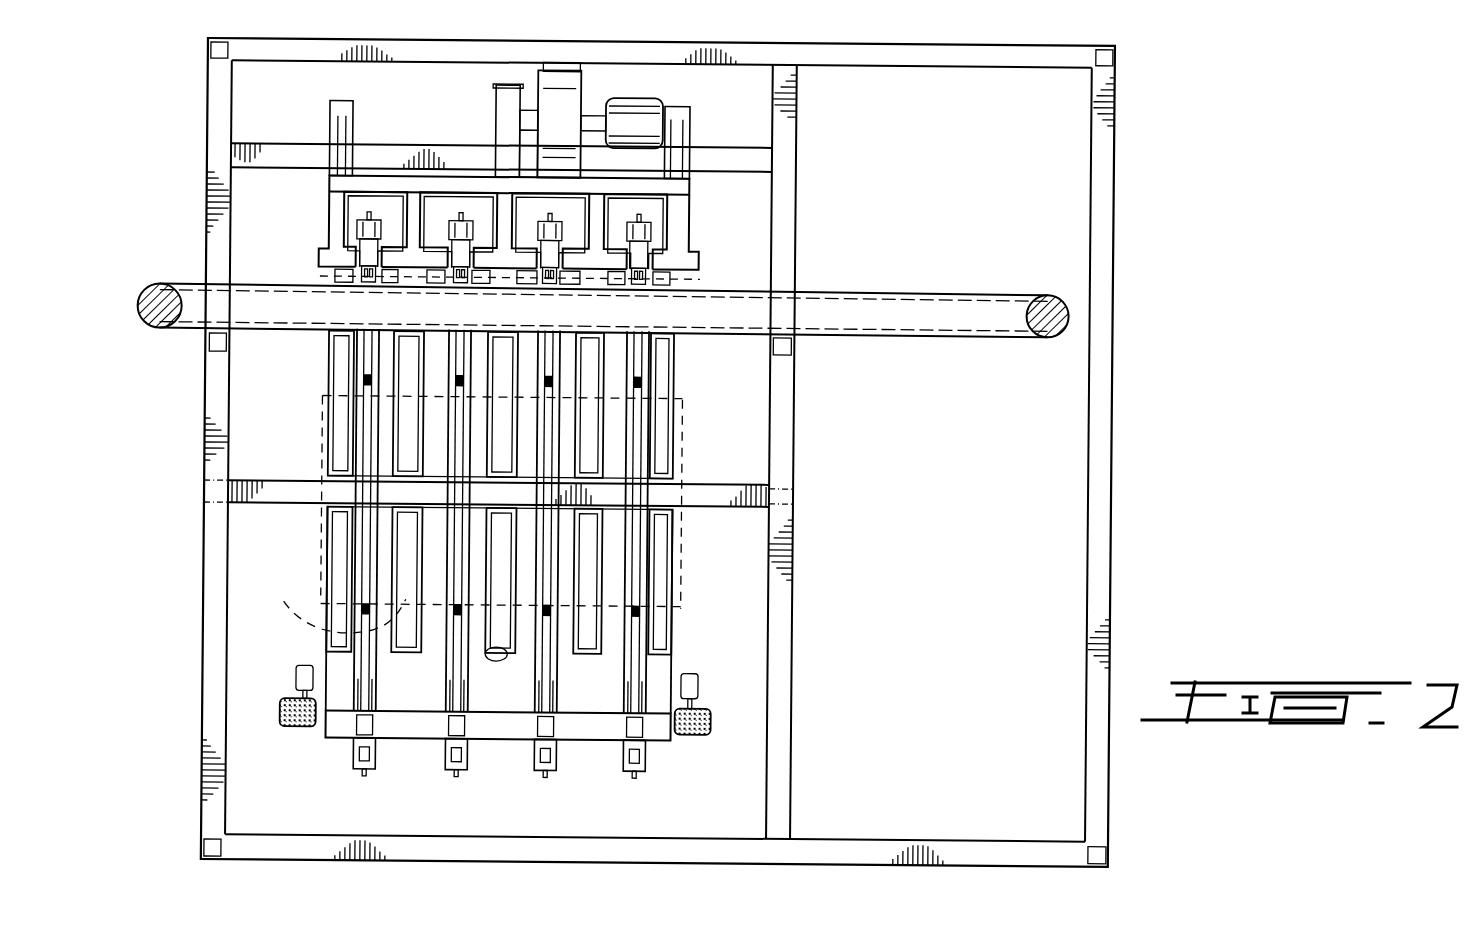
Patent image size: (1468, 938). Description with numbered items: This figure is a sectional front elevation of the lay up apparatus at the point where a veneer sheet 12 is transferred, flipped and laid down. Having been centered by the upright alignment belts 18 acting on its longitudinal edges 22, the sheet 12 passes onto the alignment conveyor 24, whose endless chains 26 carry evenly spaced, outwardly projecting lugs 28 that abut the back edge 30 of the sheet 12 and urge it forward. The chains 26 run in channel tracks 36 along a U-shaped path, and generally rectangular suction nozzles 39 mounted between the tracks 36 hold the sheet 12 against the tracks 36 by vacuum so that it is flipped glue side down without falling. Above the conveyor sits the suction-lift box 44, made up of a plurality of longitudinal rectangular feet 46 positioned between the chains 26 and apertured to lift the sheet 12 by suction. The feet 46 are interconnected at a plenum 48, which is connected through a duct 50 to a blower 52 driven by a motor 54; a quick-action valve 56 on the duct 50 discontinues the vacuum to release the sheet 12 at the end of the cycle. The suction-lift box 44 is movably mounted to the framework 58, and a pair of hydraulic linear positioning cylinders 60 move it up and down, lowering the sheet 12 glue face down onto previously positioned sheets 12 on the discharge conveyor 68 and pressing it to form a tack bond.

The veneer sheet 12 is at (320, 262).
The alignment belt 18 is at (283, 716).
The longitudinal edge 22 is at (322, 532).
The alignment conveyor 24 is at (428, 750).
The endless chain 26 is at (633, 690).
The lug 28 is at (627, 612).
The back edge 30 is at (380, 612).
The channel track 36 is at (448, 363).
The suction nozzle 39 is at (407, 435).
The suction-lift box 44 is at (326, 213).
The foot 46 is at (607, 262).
The plenum 48 is at (650, 185).
The duct 50 is at (500, 140).
The blower 52 is at (560, 80).
The motor 54 is at (658, 103).
The quick-action valve 56 is at (514, 112).
The framework 58 is at (776, 158).
The hydraulic linear positioning cylinder 60 is at (338, 135).
The discharge conveyor 68 is at (1062, 288).